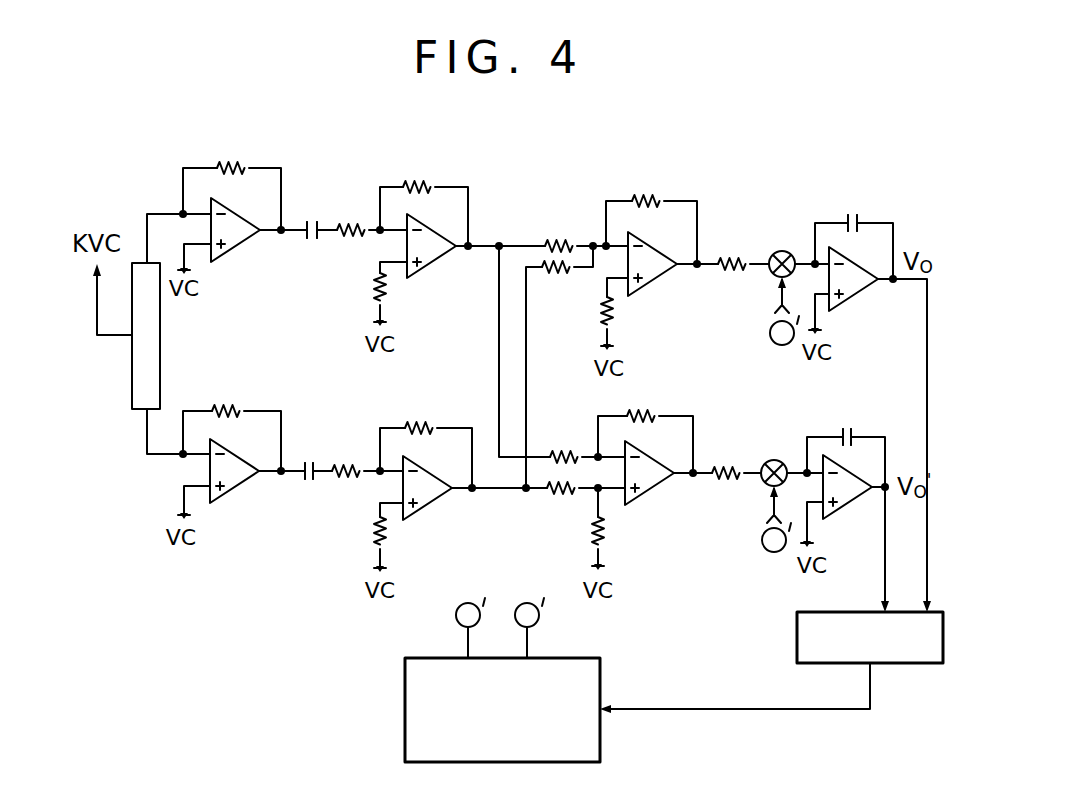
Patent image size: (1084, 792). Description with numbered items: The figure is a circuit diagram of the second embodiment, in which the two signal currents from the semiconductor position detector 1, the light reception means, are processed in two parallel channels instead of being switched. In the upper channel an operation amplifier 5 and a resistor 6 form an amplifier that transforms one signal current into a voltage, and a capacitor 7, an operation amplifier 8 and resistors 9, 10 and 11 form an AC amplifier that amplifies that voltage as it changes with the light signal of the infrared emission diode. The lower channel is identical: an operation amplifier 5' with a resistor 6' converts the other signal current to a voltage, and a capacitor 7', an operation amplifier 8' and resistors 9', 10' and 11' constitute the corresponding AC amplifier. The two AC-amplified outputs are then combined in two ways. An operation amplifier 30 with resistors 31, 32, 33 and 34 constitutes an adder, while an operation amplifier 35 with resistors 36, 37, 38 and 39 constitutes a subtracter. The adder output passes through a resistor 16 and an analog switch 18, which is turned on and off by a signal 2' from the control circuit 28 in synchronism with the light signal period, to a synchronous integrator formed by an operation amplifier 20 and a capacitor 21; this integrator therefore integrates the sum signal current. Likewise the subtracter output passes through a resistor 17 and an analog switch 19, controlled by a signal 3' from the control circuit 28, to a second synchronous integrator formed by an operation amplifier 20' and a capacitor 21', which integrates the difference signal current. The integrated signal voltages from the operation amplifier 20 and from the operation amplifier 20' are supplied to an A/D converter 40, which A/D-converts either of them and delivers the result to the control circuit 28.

The semiconductor position detector 1 is at (130, 372).
The control signal 2' is at (627, 471).
The control signal 3' is at (653, 575).
The operation amplifier 5 is at (236, 251).
The resistor 6 is at (245, 143).
The capacitor 7 is at (319, 191).
The operation amplifier 8 is at (434, 260).
The resistor 9 is at (339, 250).
The resistor 10 is at (433, 162).
The resistor 11 is at (352, 300).
The resistor 16 is at (735, 254).
The resistor 17 is at (722, 462).
The analog switch 18 is at (781, 250).
The analog switch 19 is at (775, 458).
The operation amplifier 20 is at (860, 297).
The capacitor 21 is at (850, 193).
The control circuit 28 is at (405, 711).
The operation amplifier 30 is at (655, 282).
The resistor 31 is at (565, 240).
The resistor 32 is at (570, 275).
The resistor 33 is at (648, 198).
The resistor 34 is at (600, 317).
The operation amplifier 35 is at (655, 494).
The resistor 36 is at (568, 450).
The resistor 37 is at (551, 494).
The resistor 38 is at (650, 412).
The resistor 39 is at (592, 537).
The A/D converter 40 is at (797, 640).
The operation amplifier 5' is at (234, 495).
The resistor 6' is at (239, 390).
The capacitor 7' is at (317, 437).
The operation amplifier 8' is at (430, 505).
The resistor 9' is at (332, 493).
The resistor 10' is at (425, 403).
The resistor 11' is at (347, 544).
The operation amplifier 20' is at (849, 503).
The capacitor 21' is at (869, 416).